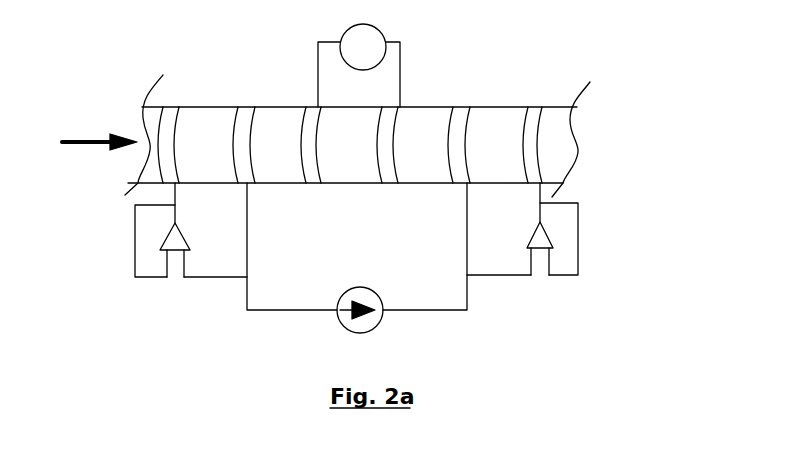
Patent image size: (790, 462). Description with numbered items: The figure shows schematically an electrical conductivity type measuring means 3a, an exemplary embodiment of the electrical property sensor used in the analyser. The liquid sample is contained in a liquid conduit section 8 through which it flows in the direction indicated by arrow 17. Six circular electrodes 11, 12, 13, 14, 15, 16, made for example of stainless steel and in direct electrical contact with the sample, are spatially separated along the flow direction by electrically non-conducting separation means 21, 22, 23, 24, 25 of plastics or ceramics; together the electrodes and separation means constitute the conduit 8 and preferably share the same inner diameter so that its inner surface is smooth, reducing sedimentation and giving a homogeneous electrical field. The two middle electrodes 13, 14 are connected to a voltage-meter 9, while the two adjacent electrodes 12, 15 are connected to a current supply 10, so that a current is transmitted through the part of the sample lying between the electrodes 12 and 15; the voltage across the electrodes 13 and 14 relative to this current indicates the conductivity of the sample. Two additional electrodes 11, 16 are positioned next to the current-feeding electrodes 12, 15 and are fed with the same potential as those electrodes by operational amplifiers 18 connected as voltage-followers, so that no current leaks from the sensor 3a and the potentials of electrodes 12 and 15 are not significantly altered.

The electrical conductivity type measuring means 3a is at (638, 113).
The liquid conduit section 8 is at (427, 107).
The voltage-meter 9 is at (378, 30).
The current supply 10 is at (375, 293).
The electrode 11 is at (176, 107).
The electrode 12 is at (253, 107).
The electrode 13 is at (318, 183).
The electrode 14 is at (388, 183).
The electrode 15 is at (467, 107).
The electrode 16 is at (543, 107).
The arrow indicating direction of flow 17 is at (99, 132).
The operational amplifiers 18 is at (178, 255).
The separation means 21 is at (208, 145).
The separation means 22 is at (280, 145).
The separation means 23 is at (351, 145).
The separation means 24 is at (425, 145).
The separation means 25 is at (499, 145).